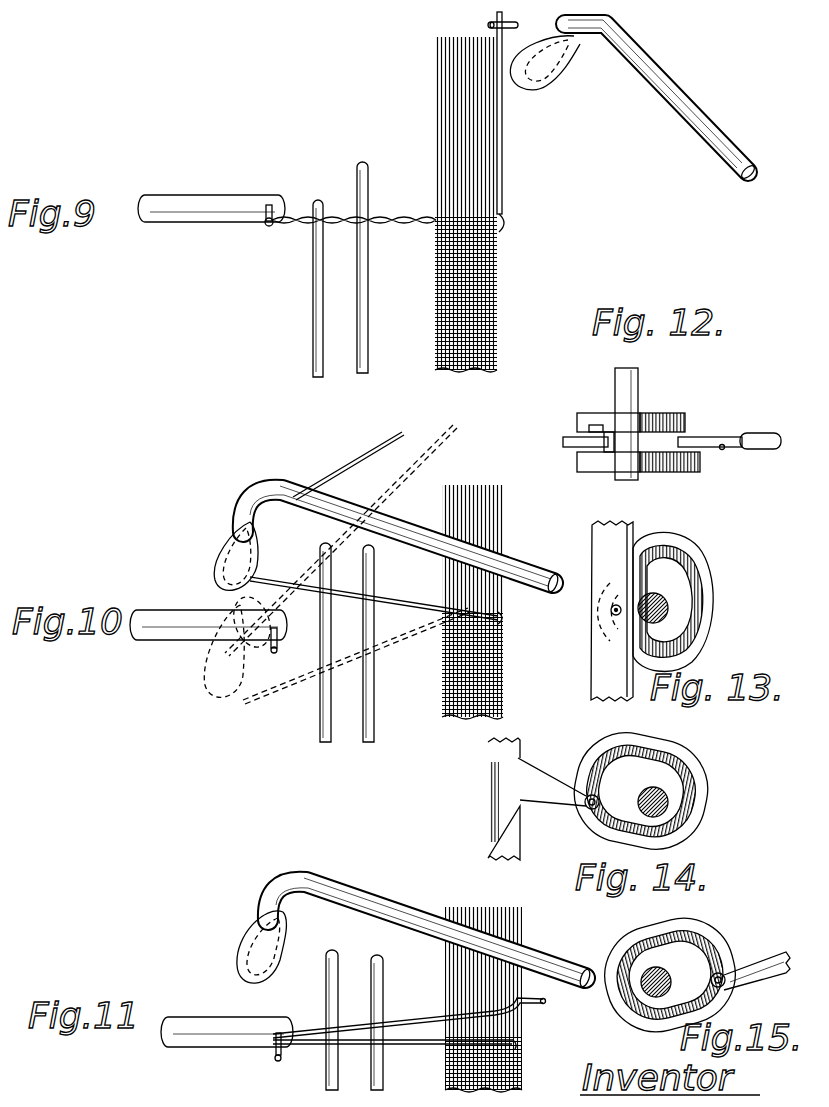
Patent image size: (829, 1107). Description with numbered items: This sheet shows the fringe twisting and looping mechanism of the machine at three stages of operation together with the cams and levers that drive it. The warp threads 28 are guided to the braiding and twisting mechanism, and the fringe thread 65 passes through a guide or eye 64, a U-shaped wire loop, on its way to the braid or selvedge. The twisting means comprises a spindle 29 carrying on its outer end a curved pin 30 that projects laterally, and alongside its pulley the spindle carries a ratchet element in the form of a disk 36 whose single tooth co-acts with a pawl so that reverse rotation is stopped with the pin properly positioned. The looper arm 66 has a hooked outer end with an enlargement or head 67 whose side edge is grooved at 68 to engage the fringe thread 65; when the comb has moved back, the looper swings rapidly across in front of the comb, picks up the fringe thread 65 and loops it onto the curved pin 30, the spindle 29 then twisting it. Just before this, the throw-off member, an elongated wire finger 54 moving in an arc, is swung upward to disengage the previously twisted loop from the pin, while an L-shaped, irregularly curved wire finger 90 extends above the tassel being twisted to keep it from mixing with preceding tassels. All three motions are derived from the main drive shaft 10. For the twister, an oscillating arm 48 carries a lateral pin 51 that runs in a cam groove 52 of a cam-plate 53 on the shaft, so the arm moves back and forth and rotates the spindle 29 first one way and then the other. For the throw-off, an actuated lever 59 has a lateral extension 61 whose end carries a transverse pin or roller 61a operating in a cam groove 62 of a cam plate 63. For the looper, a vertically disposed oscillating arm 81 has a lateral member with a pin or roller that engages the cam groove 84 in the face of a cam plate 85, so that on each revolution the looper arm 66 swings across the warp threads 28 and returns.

In FIG. 12, the main drive shaft 10 is at (640, 384).
In FIG. 13, the main drive shaft 10 is at (667, 615).
In FIG. 14, the main drive shaft 10 is at (666, 796).
In FIG. 15, the main drive shaft 10 is at (645, 988).
In FIG. 9, the warp threads 28 is at (434, 88).
In FIG. 10, the warp threads 28 is at (500, 503).
In FIG. 11, the warp threads 28 is at (495, 900).
In FIG. 9, the spindle 29 is at (178, 195).
In FIG. 10, the spindle 29 is at (152, 610).
In FIG. 11, the spindle 29 is at (227, 1049).
In FIG. 9, the curved pin 30 is at (272, 203).
In FIG. 11, the curved pin 30 is at (278, 1062).
In FIG. 10, the ratchet disk 36 is at (293, 648).
In FIG. 12, the oscillating arm 48 is at (563, 444).
In FIG. 13, the oscillating arm 48 is at (628, 562).
In FIG. 12, the lateral pin 51 is at (577, 430).
In FIG. 13, the lateral pin 51 is at (610, 622).
In FIG. 12, the cam groove 52 is at (605, 418).
In FIG. 13, the cam groove 52 is at (696, 560).
In FIG. 12, the cam-plate 53 is at (688, 420).
In FIG. 13, the cam-plate 53 is at (708, 568).
In FIG. 9, the wire finger 54 is at (313, 313).
In FIG. 10, the wire finger 54 is at (320, 729).
In FIG. 11, the wire finger 54 is at (326, 1094).
In FIG. 12, the actuated lever 59 is at (771, 433).
In FIG. 14, the actuated lever 59 is at (497, 816).
In FIG. 12, the lateral extension 61 is at (713, 437).
In FIG. 14, the lateral extension 61 is at (551, 792).
In FIG. 12, the transverse pin or roller 61a is at (722, 449).
In FIG. 14, the transverse pin or roller 61a is at (590, 812).
In FIG. 12, the cam groove 62 is at (690, 472).
In FIG. 14, the cam groove 62 is at (680, 760).
In FIG. 12, the cam plate 63 is at (590, 472).
In FIG. 14, the cam plate 63 is at (620, 742).
In FIG. 9, the guide or eye 64 is at (517, 24).
In FIG. 9, the fringe thread 65 is at (503, 130).
In FIG. 10, the fringe thread 65 is at (340, 456).
In FIG. 11, the fringe thread 65 is at (413, 1044).
In FIG. 9, the looper arm 66 is at (700, 136).
In FIG. 10, the looper arm 66 is at (413, 539).
In FIG. 11, the looper arm 66 is at (413, 908).
In FIG. 9, the head 67 is at (553, 86).
In FIG. 10, the head 67 is at (216, 566).
In FIG. 11, the head 67 is at (237, 956).
In FIG. 9, the groove 68 is at (548, 70).
In FIG. 15, the oscillating arm 81 is at (757, 983).
In FIG. 15, the cam groove 84 is at (733, 970).
In FIG. 15, the cam plate 85 is at (712, 946).
In FIG. 9, the wire finger 90 is at (368, 328).
In FIG. 10, the wire finger 90 is at (375, 706).
In FIG. 11, the wire finger 90 is at (383, 993).